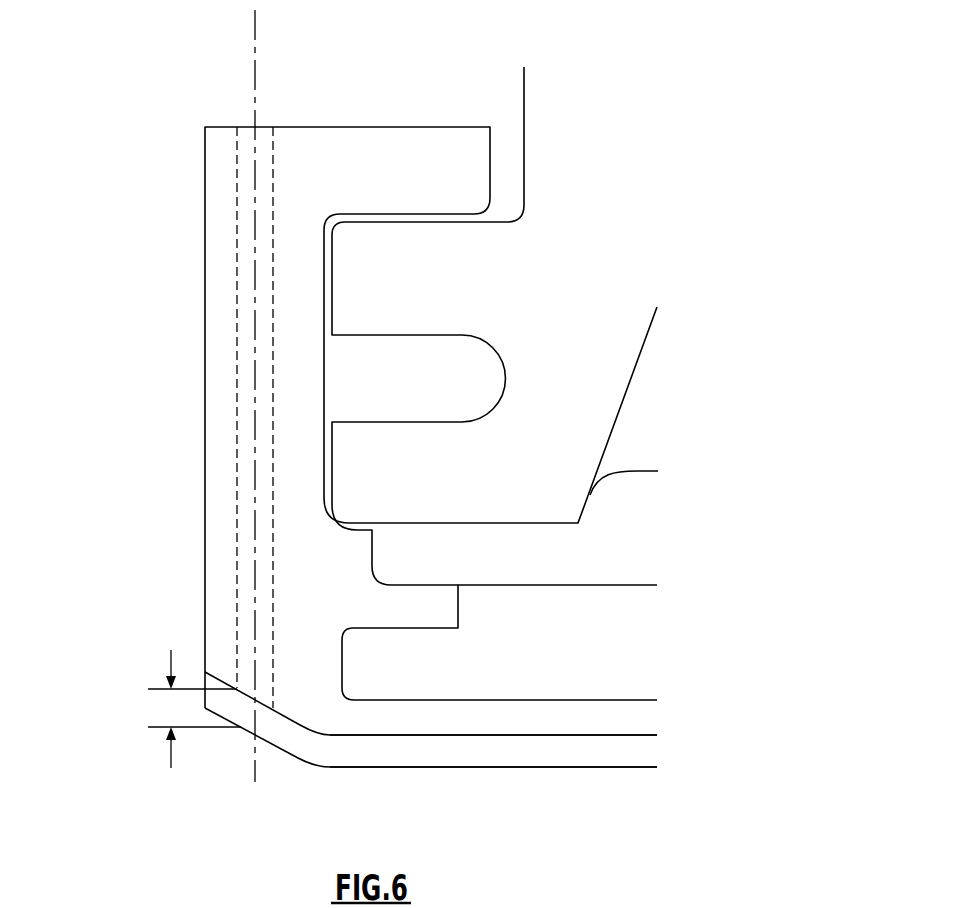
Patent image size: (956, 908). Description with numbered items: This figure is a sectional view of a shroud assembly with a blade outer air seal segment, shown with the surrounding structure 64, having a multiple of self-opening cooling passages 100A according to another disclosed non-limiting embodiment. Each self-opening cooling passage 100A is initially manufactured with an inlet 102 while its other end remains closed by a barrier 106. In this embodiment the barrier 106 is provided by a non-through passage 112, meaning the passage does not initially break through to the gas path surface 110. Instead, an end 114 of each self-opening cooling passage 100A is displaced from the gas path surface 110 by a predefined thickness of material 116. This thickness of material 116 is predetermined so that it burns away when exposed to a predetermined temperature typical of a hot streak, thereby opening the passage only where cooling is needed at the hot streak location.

The housing 64 is at (197, 533).
The self-opening cooling passage 100A is at (222, 228).
The inlet 102 is at (267, 127).
The barrier 106 is at (290, 701).
The gas path surface 110 is at (530, 768).
The non-through passage 112 is at (252, 403).
The end 114 is at (237, 688).
The thickness of material 116 is at (153, 706).